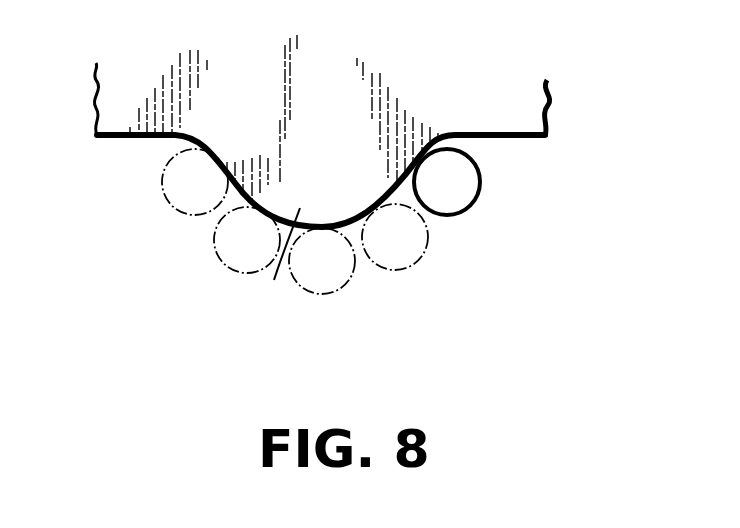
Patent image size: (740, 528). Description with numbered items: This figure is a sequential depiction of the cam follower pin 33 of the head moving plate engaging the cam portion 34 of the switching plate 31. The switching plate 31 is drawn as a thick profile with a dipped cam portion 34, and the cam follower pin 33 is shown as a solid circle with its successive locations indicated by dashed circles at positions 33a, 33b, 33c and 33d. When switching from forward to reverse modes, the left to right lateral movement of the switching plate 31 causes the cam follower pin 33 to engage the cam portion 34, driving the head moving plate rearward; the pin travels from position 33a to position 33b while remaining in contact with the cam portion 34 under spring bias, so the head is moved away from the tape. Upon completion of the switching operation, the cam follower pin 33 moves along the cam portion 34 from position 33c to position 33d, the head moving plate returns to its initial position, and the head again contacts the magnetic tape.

The switching plate 31 is at (527, 108).
The cam follower pin 33 is at (465, 194).
The position of cam follower pin 33a is at (415, 255).
The position of cam follower pin 33b is at (322, 295).
The position of cam follower pin 33c is at (224, 258).
The position of cam follower pin 33d is at (177, 202).
The cam portion 34 is at (278, 259).